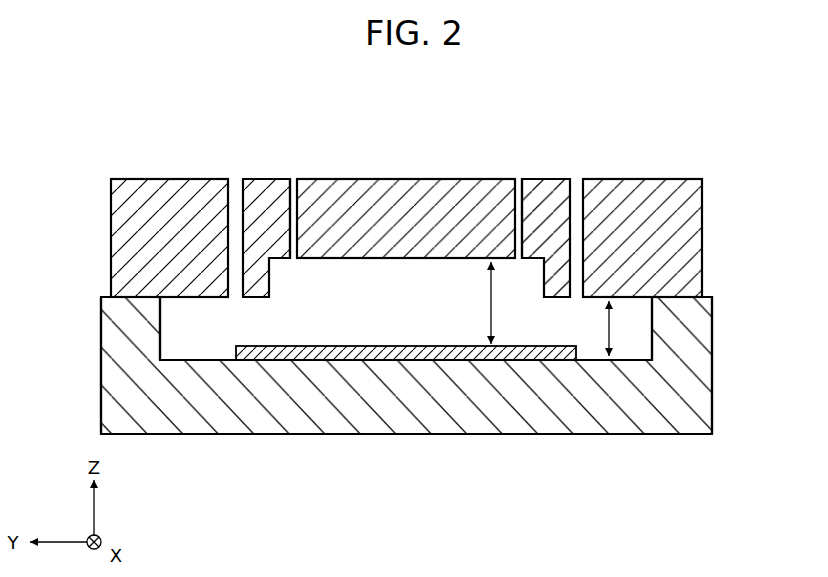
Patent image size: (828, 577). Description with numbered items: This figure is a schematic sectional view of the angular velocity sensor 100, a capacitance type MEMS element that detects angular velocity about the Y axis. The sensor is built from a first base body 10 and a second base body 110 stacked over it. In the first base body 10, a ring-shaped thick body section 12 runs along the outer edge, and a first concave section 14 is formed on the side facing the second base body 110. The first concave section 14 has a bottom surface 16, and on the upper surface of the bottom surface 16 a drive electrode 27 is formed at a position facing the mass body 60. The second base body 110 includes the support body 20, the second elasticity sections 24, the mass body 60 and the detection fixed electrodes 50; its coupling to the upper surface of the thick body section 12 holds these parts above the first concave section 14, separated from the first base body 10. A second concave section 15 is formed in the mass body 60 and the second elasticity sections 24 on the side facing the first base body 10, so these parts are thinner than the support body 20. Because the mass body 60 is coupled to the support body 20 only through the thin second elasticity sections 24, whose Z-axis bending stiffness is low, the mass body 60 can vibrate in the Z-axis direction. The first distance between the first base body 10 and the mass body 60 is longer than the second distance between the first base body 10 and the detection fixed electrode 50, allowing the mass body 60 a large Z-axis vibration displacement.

The angular velocity sensor 100 is at (735, 131).
The second base body 110 is at (714, 232).
The detection fixed electrode 50 is at (134, 184).
The support body 20 is at (252, 185).
The second elasticity section 24 is at (288, 182).
The mass body 60 is at (407, 184).
The second concave section 15 is at (352, 281).
The first base body 10 is at (725, 345).
The thick body section 12 is at (101, 380).
The first concave section 14 is at (198, 338).
The bottom surface 16 is at (592, 353).
The drive electrode 27 is at (299, 346).